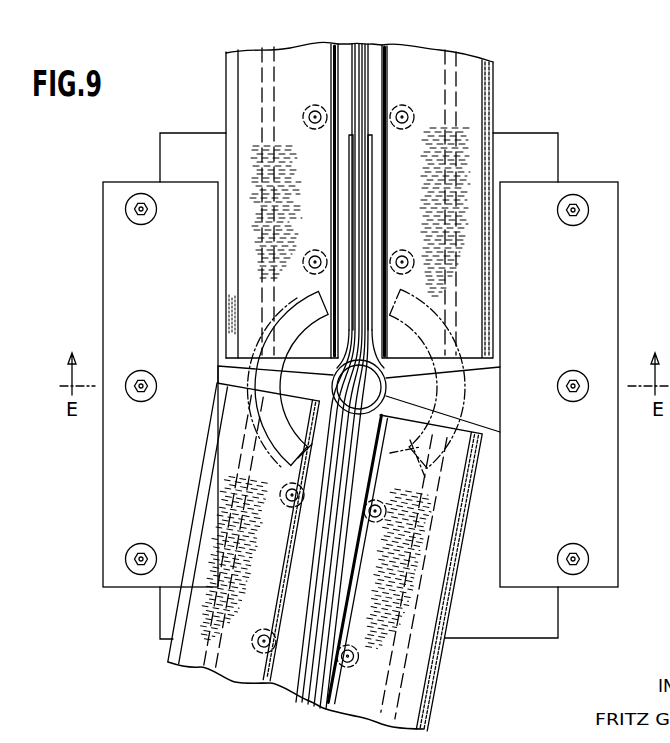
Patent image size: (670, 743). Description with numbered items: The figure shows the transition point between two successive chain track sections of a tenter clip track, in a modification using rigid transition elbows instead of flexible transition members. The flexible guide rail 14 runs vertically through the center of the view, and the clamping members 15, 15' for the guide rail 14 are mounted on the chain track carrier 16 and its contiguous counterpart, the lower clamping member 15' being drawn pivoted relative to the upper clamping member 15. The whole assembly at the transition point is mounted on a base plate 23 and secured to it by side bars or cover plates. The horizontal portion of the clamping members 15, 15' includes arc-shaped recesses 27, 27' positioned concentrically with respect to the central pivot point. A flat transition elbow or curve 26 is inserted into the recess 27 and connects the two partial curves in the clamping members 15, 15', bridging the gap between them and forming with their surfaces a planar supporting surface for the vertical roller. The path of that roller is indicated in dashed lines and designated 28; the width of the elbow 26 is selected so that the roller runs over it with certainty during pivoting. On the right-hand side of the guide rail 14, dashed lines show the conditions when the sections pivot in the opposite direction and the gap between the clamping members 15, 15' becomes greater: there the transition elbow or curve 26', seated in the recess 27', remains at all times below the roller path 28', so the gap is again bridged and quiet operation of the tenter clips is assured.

The flexible guide rail 14 is at (364, 44).
The clamping member 15 is at (282, 183).
The clamping member 15' is at (244, 557).
The chain track carrier 16 is at (230, 92).
The base plate 23 is at (527, 143).
The transition elbow or curve 26 is at (245, 379).
The transition elbow or curve 26' is at (468, 378).
The arc-shaped recess 27 is at (281, 490).
The arc-shaped recess 27' is at (394, 472).
The path of the roller 28 is at (258, 182).
The path of the traveling rollers 28' is at (456, 182).